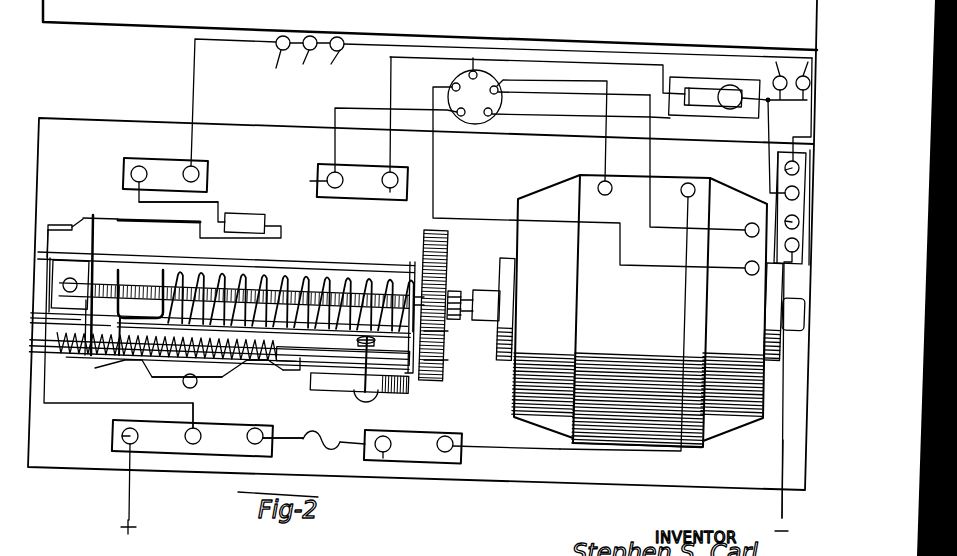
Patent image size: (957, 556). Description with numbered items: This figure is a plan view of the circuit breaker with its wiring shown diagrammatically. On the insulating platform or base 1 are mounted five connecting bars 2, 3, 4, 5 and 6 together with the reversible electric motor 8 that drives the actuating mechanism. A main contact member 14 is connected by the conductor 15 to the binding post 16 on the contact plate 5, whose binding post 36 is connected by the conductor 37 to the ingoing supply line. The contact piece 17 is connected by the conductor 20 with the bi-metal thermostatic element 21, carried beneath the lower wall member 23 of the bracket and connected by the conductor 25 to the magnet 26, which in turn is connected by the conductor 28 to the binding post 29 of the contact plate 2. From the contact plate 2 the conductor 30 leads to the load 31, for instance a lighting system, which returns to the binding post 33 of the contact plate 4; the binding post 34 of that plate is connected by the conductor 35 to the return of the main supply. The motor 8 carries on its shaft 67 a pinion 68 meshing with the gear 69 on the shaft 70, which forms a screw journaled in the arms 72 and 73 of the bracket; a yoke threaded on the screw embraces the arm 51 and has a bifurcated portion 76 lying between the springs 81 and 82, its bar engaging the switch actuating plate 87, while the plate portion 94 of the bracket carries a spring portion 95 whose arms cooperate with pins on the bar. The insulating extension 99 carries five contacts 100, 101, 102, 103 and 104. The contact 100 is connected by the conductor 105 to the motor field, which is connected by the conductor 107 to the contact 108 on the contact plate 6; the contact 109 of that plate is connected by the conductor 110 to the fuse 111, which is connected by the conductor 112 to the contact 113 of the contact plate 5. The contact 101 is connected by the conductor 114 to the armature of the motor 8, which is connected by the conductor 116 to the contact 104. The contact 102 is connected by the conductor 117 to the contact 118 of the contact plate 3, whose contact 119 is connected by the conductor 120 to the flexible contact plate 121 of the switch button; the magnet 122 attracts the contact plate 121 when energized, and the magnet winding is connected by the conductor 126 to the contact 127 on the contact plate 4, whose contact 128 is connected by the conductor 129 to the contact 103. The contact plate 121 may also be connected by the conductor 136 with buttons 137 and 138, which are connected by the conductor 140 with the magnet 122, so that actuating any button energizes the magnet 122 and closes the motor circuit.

The platform or base 1 is at (471, 479).
The connecting bar 2 is at (165, 175).
The connecting bar 3 is at (362, 182).
The connecting bar 4 is at (789, 152).
The connecting bar 5 is at (192, 438).
The connecting bar 6 is at (413, 446).
The motor 8 is at (650, 311).
The main contact member 14 is at (60, 240).
The conductor 15 is at (68, 430).
The binding post 16 is at (194, 446).
The contact piece 17 is at (60, 222).
The conductor 20 is at (97, 222).
The thermostatic element 21 is at (133, 217).
The lower wall member 23 is at (70, 275).
The conductor 25 is at (283, 238).
The magnet 26 is at (238, 213).
The conductor 28 is at (164, 205).
The binding post 29 is at (147, 152).
The conductor 30 is at (193, 91).
The load 31 is at (310, 57).
The binding post 33 is at (785, 170).
The binding post 34 is at (785, 246).
The conductor 35 is at (782, 465).
The binding post 36 is at (121, 438).
The conductor 37 is at (127, 492).
The arm 51 is at (150, 292).
The shaft 67 is at (462, 320).
The pinion 68 is at (458, 293).
The gear 69 is at (453, 244).
The shaft 70 is at (445, 343).
The arm 72 is at (95, 270).
The arm 73 is at (414, 262).
The bifurcated portion 76 is at (138, 379).
The spring 81 is at (74, 360).
The spring 82 is at (168, 379).
The switch actuating plate 87 is at (475, 97).
The plate portion 94 is at (233, 392).
The spring portion 95 is at (240, 380).
The extension 99 is at (383, 397).
The contact 100 is at (487, 73).
The contact 101 is at (452, 86).
The contact 102 is at (460, 117).
The contact 103 is at (492, 117).
The contact 104 is at (500, 93).
The conductor 105 is at (567, 84).
The conductor 107 is at (558, 452).
The contact 108 is at (466, 431).
The contact 109 is at (385, 452).
The conductor 110 is at (355, 438).
The fuse 111 is at (313, 450).
The conductor 112 is at (290, 446).
The contact 113 is at (262, 424).
The conductor 114 is at (433, 184).
The conductor 116 is at (651, 162).
The conductor 117 is at (376, 110).
The contact 118 is at (310, 181).
The contact 119 is at (390, 193).
The conductor 120 is at (389, 154).
The contact plate 121 is at (713, 97).
The magnet 122 is at (727, 90).
The conductor 126 is at (778, 165).
The contact 127 is at (785, 221).
The contact 128 is at (770, 194).
The conductor 129 is at (737, 124).
The conductor 136 is at (732, 66).
The button 137 is at (769, 68).
The button 138 is at (805, 68).
The conductor 140 is at (788, 103).